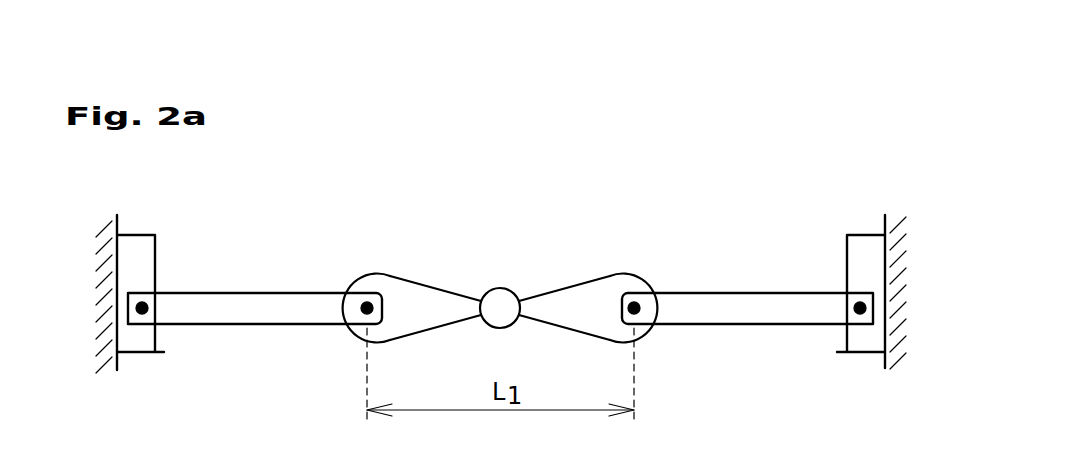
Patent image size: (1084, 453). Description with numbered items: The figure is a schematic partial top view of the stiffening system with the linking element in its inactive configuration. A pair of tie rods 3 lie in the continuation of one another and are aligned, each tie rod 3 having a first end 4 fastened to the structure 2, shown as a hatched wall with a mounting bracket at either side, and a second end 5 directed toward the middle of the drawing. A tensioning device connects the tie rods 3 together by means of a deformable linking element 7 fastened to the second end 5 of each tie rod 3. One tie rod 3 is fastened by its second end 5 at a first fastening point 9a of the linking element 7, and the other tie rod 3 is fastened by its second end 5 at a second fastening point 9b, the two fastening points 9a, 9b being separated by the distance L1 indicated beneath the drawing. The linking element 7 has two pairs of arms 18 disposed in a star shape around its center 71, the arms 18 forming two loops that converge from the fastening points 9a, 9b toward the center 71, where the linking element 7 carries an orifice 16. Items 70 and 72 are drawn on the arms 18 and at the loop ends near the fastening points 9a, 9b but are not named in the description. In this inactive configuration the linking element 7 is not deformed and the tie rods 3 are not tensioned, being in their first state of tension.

The structure 2 is at (137, 260).
The tie rod 3 is at (250, 302).
The first end 4 is at (150, 308).
The second end 5 is at (330, 311).
The first fastening point 9a is at (358, 308).
The second fastening point 9b is at (640, 306).
The deformable linking element 7 is at (578, 307).
The orifice 16 is at (497, 312).
The arms 18 is at (418, 308).
The flexure strip 70 is at (462, 307).
The center 71 is at (508, 305).
The end loop 72 is at (360, 282).